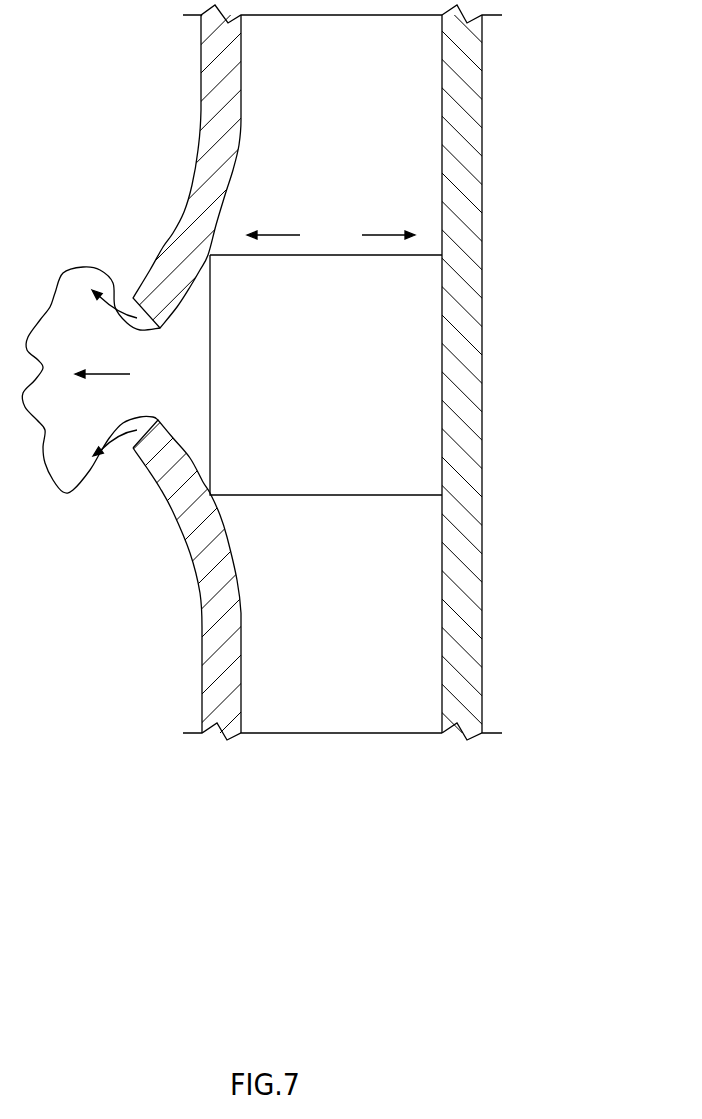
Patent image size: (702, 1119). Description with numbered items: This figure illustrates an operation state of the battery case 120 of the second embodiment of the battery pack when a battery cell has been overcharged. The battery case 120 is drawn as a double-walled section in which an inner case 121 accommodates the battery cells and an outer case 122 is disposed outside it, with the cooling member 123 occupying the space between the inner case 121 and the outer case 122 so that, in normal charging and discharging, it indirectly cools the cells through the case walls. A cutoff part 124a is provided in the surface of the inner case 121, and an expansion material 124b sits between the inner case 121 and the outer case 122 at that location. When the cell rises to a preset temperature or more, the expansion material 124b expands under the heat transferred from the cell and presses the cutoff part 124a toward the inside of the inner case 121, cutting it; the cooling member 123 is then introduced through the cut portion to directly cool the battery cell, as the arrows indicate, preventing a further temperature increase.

The battery case 120 is at (351, 400).
The inner case 121 is at (220, 162).
The outer case 122 is at (462, 83).
The cooling member 123 is at (402, 122).
The cutoff part 124a is at (160, 422).
The expansion material 124b is at (400, 375).